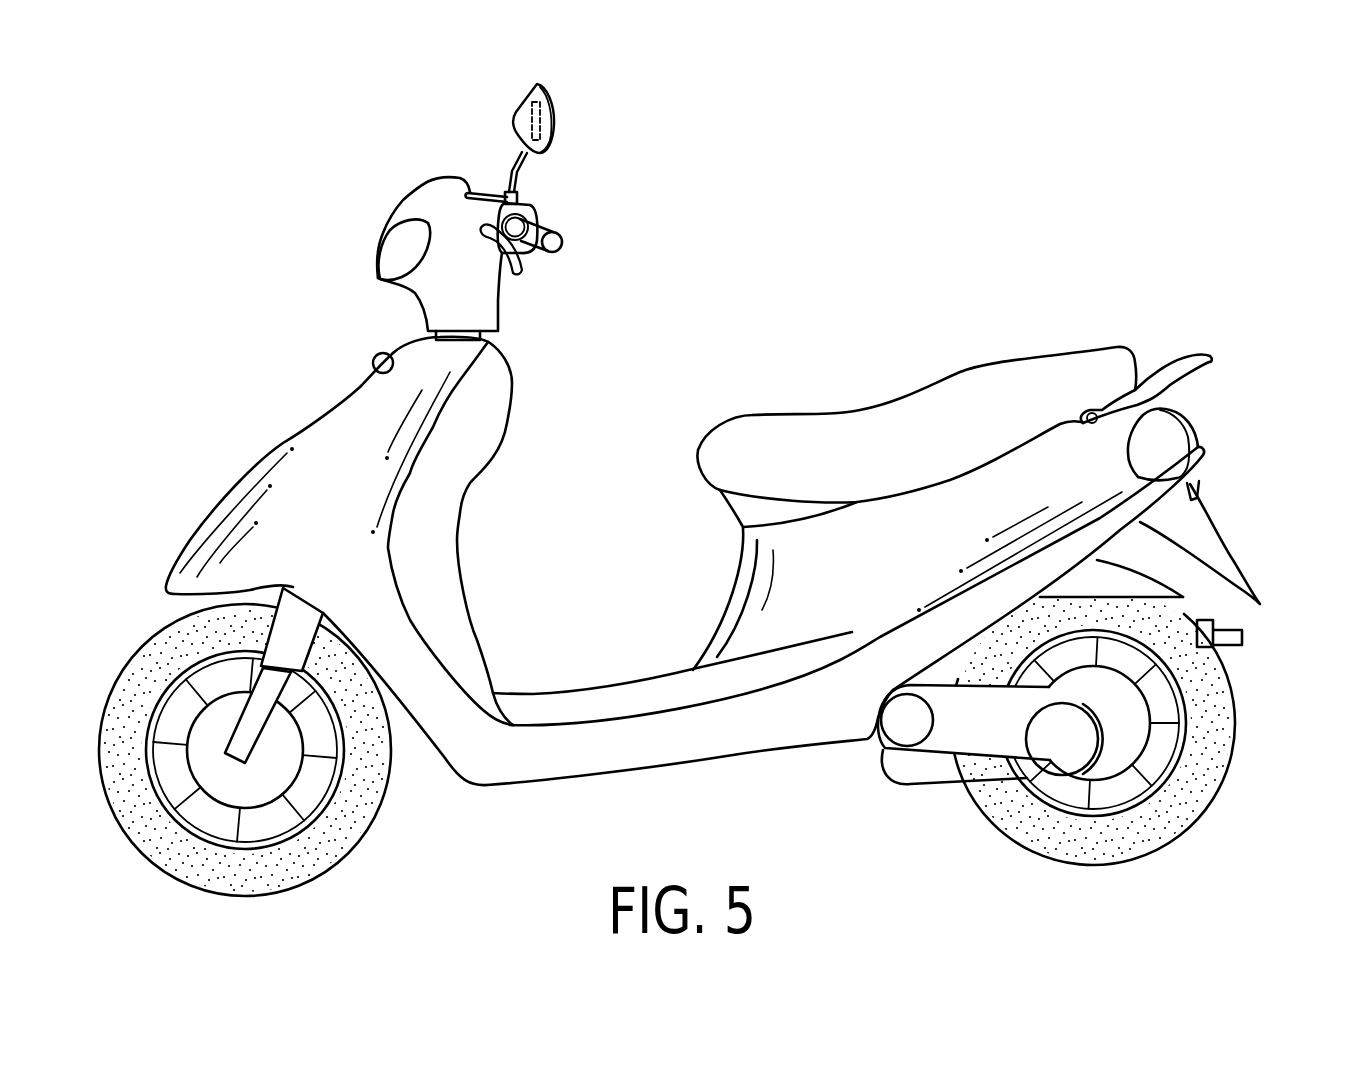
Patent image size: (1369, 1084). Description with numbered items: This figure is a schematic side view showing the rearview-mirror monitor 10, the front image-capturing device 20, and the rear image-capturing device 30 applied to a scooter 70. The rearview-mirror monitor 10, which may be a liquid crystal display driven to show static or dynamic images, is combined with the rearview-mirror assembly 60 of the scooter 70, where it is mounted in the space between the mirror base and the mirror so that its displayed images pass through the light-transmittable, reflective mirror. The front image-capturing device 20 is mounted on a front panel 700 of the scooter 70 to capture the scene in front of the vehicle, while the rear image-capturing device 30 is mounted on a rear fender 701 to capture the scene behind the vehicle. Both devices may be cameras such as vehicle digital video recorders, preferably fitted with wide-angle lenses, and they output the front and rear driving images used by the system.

The rearview-mirror monitor 10 is at (533, 122).
The front image-capturing device 20 is at (370, 362).
The rear image-capturing device 30 is at (1200, 492).
The rearview-mirror assembly 60 is at (557, 115).
The scooter 70 is at (808, 349).
The front panel 700 is at (283, 443).
The rear fender 701 is at (1203, 540).